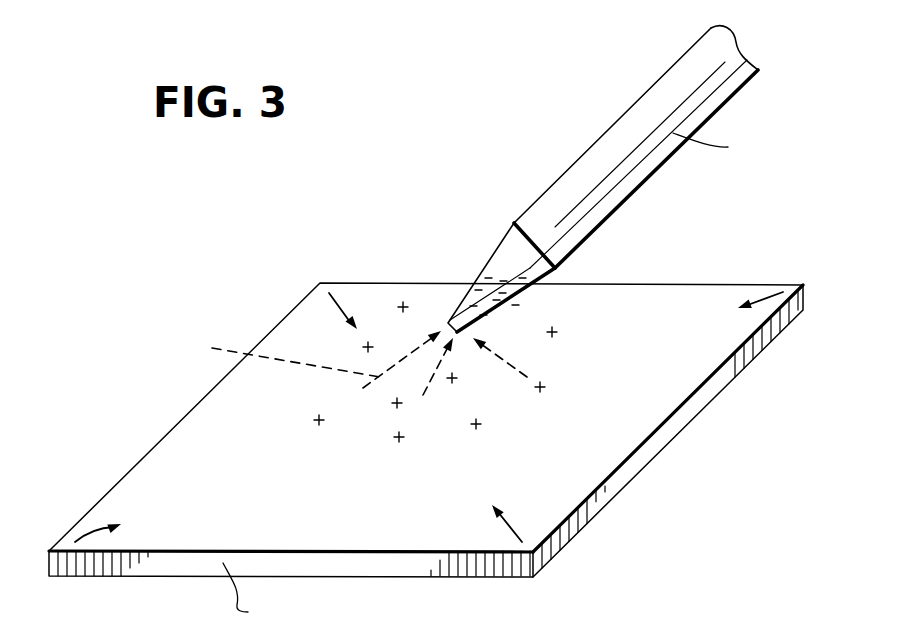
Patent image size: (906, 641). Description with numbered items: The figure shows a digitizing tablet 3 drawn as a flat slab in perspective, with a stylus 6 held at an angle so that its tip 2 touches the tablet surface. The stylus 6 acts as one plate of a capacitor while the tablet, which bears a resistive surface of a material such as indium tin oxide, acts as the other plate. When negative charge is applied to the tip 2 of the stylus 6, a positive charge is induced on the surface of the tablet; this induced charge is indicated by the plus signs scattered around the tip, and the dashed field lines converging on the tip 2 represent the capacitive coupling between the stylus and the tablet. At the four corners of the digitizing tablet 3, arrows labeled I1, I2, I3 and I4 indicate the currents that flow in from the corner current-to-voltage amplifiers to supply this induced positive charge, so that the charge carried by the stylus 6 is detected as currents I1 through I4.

The tip 2 is at (492, 257).
The digitizing tablet 3 is at (643, 310).
The stylus 6 is at (633, 122).
The current I1 is at (343, 307).
The current I2 is at (92, 535).
The current I3 is at (510, 527).
The current I4 is at (768, 297).